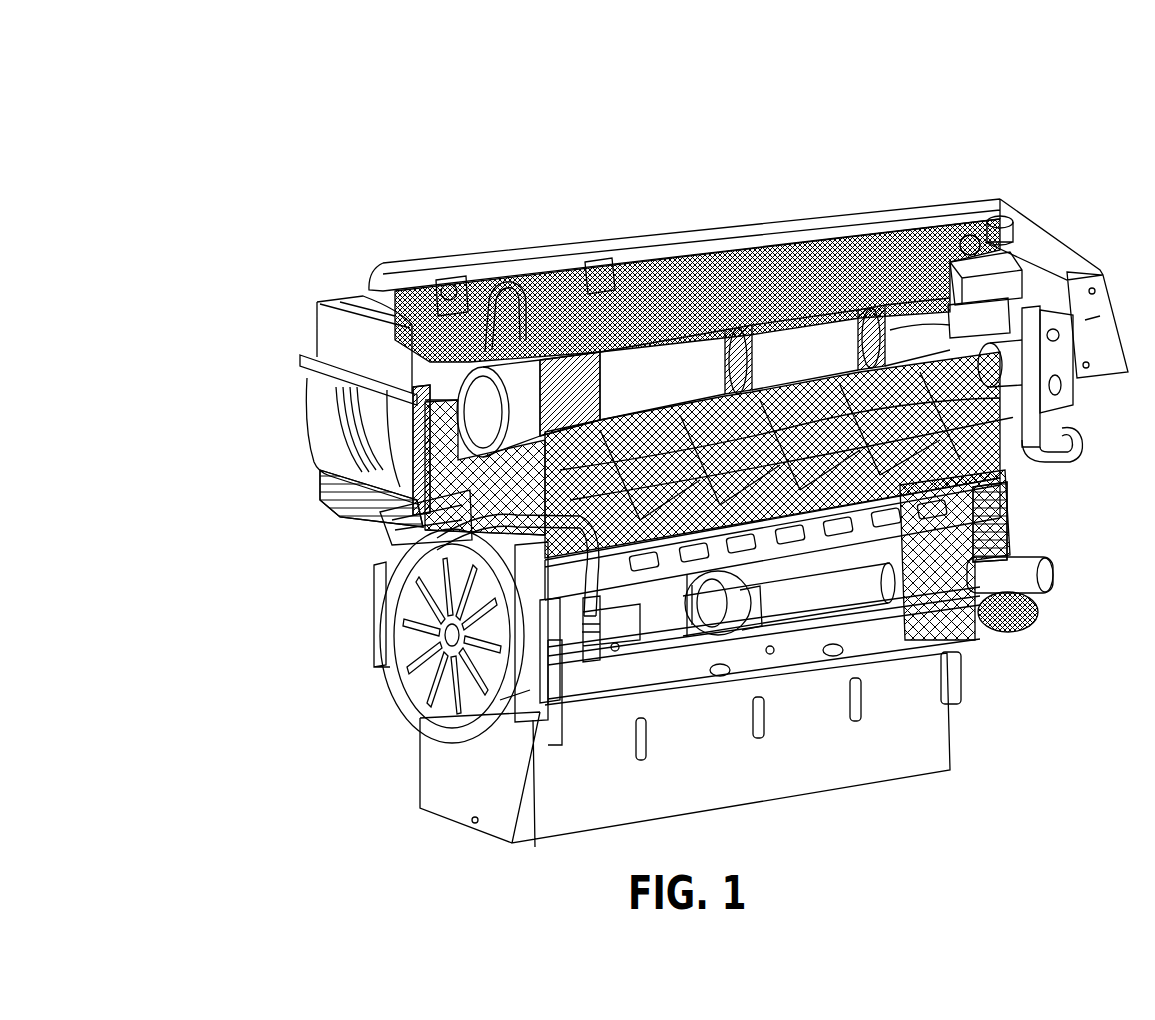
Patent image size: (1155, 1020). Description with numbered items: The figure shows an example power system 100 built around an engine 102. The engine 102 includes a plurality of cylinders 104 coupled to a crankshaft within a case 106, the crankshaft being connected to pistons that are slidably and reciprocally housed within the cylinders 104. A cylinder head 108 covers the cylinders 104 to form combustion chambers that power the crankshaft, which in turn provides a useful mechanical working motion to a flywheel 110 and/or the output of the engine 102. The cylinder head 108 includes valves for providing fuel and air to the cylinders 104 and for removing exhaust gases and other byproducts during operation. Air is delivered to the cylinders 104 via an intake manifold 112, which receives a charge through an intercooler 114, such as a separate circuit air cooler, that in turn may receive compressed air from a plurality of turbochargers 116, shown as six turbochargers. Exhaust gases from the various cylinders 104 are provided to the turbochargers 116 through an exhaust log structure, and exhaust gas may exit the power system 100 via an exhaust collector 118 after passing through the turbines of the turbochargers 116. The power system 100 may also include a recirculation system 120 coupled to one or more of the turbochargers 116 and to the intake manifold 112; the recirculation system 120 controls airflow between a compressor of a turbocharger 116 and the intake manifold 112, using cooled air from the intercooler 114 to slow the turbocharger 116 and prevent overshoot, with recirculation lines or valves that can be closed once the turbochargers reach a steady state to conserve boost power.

The power system 100 is at (220, 58).
The engine 102 is at (1060, 212).
The cylinders 104 is at (1042, 485).
The case 106 is at (573, 698).
The cylinder head 108 is at (437, 567).
The flywheel 110 is at (428, 705).
The intake manifold 112 is at (385, 518).
The intercooler 114 is at (330, 408).
The turbochargers 116 is at (503, 268).
The exhaust collector 118 is at (600, 250).
The recirculation system 120 is at (380, 245).